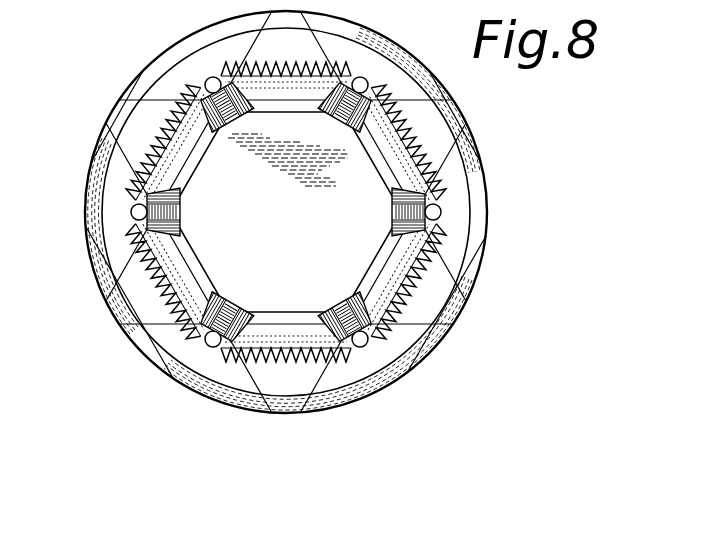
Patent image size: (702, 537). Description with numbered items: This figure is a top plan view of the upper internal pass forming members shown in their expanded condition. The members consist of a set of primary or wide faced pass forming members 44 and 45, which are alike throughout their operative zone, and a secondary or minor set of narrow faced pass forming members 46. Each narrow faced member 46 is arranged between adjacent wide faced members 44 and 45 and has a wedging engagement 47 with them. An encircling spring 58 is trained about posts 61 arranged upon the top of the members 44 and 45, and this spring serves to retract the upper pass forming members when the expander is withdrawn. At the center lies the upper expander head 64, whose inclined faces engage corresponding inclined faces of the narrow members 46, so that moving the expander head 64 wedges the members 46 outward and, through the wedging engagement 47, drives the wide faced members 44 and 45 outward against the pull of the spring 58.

The primary wide faced pass forming member 44 is at (113, 208).
The primary wide faced pass forming member 45 is at (213, 368).
The narrow faced pass forming member 46 is at (145, 292).
The wedging engagement 47 is at (448, 262).
The encircling spring 58 is at (411, 298).
The post 61 is at (441, 210).
The upper expander head 64 is at (286, 212).